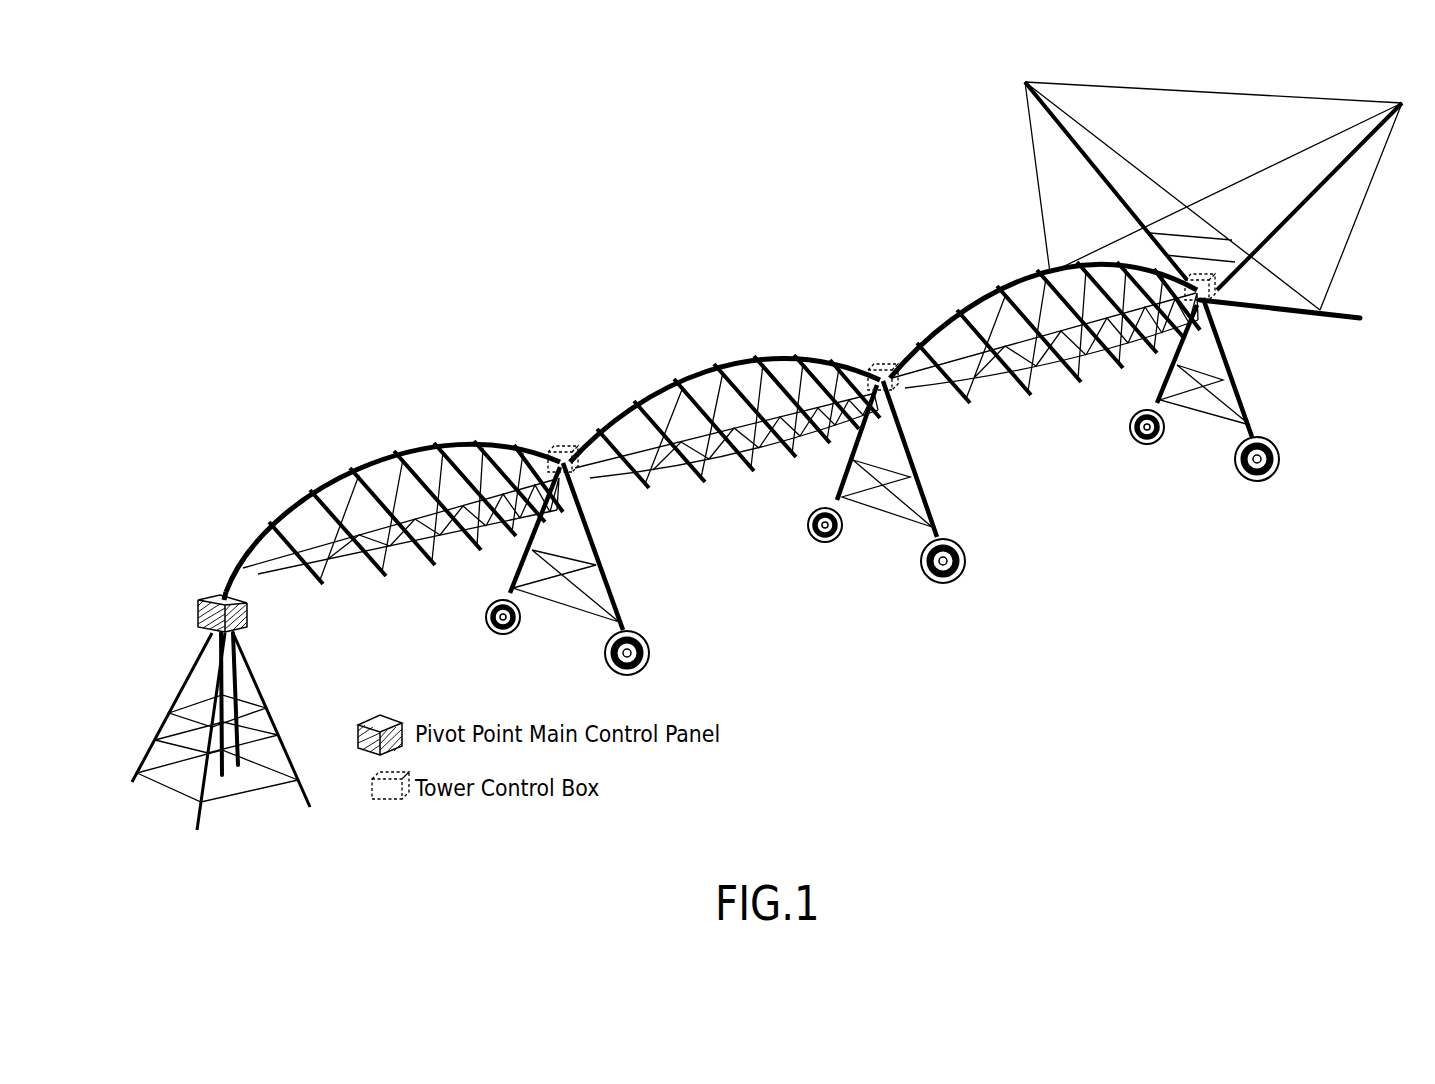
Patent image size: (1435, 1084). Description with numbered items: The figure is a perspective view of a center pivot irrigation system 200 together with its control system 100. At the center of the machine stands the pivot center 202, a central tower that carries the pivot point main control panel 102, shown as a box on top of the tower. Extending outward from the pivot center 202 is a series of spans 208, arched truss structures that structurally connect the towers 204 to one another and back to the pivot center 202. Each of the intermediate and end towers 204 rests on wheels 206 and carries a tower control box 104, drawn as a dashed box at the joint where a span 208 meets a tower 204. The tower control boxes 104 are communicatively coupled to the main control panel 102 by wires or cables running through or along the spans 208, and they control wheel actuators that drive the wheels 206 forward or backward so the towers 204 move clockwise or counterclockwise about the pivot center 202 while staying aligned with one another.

The control system 100 is at (270, 255).
The pivot point main control panel 102 is at (247, 612).
The tower control box 104 is at (563, 448).
The center pivot irrigation system 200 is at (872, 625).
The pivot center 202 is at (258, 690).
The tower 204 is at (585, 515).
The wheel 206 is at (502, 633).
The span 208 is at (380, 458).